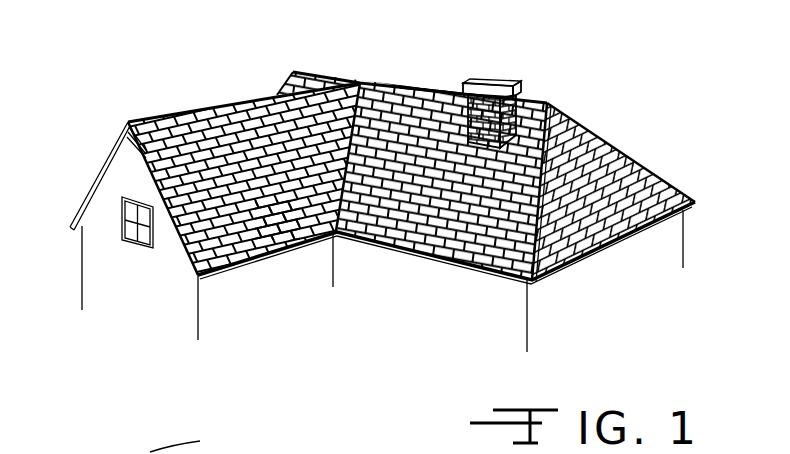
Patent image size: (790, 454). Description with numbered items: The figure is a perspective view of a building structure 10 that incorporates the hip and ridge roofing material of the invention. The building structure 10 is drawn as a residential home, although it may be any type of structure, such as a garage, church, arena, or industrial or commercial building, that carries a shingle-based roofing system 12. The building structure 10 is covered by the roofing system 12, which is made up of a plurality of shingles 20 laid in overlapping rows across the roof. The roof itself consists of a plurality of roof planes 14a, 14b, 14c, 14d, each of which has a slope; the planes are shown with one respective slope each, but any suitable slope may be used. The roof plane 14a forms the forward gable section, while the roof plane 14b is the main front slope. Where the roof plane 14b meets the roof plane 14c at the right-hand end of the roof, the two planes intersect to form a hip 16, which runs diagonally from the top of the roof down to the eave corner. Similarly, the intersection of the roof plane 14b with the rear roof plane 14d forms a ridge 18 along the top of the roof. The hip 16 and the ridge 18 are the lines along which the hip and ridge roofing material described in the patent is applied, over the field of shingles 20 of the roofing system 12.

The building structure 10 is at (100, 163).
The shingle-based roofing system 12 is at (188, 112).
The roof plane 14a is at (205, 215).
The roof plane 14b is at (480, 228).
The roof plane 14c is at (610, 222).
The roof plane 14d is at (430, 88).
The hip 16 is at (542, 232).
The ridge 18 is at (365, 84).
The shingles 20 is at (278, 215).